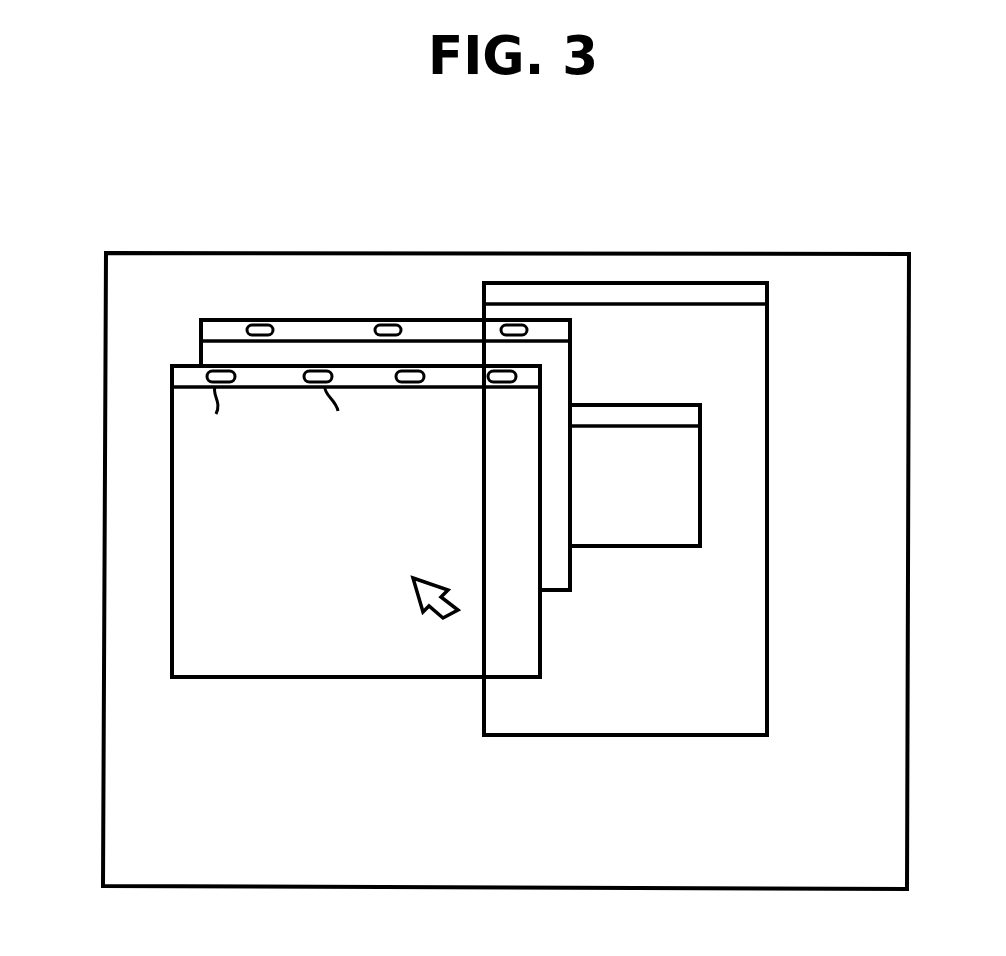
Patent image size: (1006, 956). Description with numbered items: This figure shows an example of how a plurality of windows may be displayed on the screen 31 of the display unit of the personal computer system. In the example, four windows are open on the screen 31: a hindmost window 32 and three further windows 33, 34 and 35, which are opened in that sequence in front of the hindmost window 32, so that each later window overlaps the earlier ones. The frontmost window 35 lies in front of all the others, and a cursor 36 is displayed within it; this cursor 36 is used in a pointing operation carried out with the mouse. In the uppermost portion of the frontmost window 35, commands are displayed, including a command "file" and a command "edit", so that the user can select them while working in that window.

The screen 31 is at (903, 284).
The hindmost window 32 is at (768, 403).
The window 33 is at (700, 505).
The window 34 is at (201, 336).
The frontmost window 35 is at (172, 486).
The cursor 36 is at (430, 610).